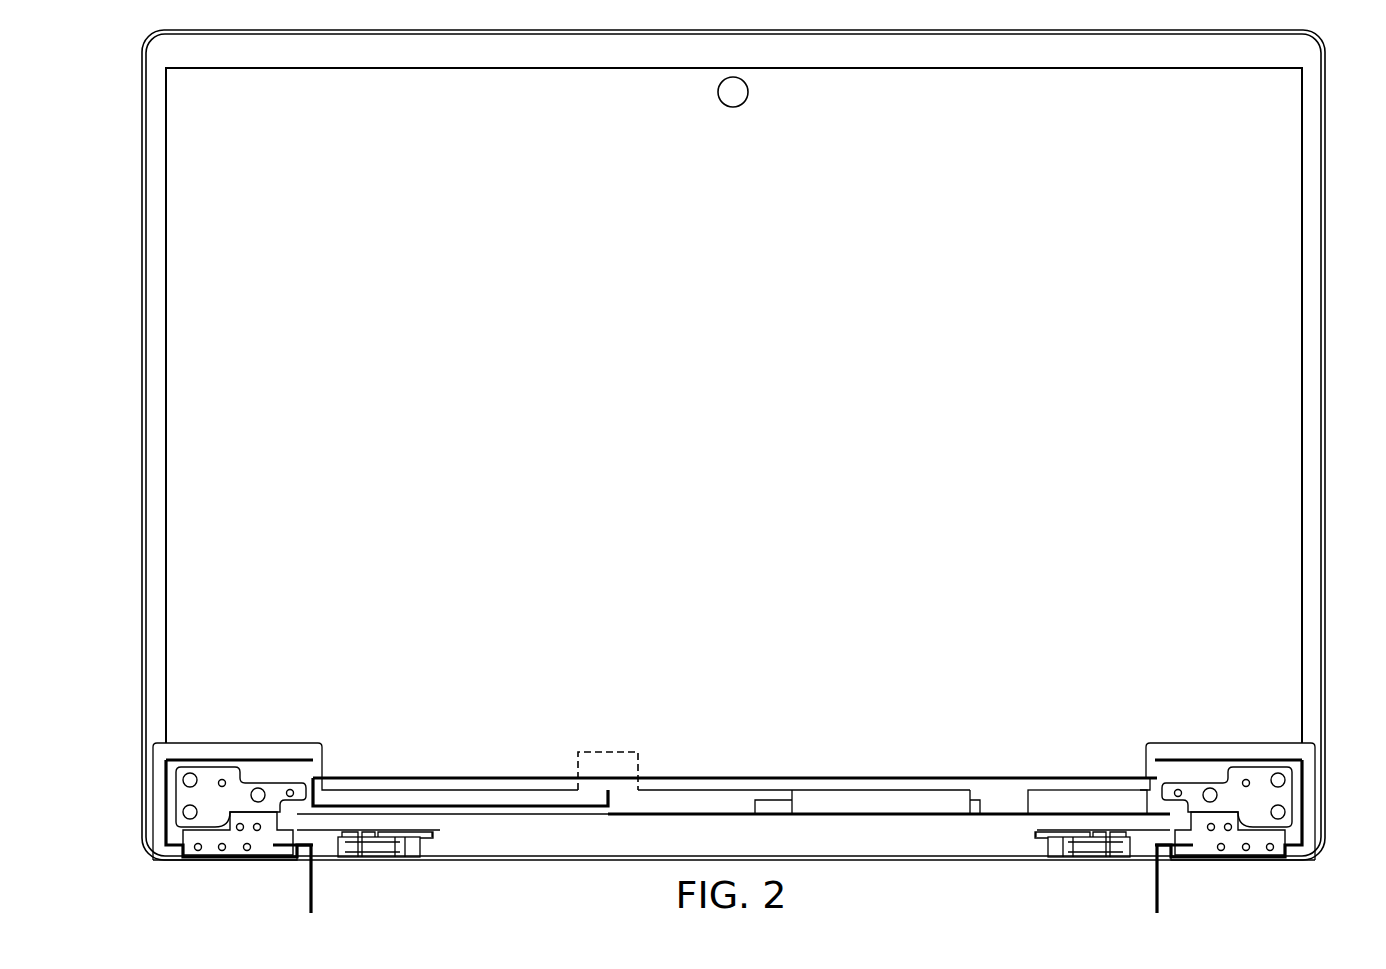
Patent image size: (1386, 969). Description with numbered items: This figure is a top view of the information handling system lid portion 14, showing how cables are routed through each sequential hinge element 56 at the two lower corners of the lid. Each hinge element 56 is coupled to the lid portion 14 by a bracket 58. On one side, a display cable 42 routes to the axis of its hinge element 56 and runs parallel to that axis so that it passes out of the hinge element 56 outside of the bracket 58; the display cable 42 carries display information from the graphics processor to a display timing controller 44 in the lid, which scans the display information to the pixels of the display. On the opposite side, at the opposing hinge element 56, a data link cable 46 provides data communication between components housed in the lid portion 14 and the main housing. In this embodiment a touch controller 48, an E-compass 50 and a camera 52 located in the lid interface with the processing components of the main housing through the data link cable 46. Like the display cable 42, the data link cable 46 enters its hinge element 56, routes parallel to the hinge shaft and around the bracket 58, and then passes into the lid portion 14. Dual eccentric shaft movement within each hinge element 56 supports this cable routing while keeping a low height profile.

The lid portion 14 is at (1312, 197).
The display cable 42 is at (310, 878).
The display timing controller 44 is at (608, 752).
The data link cable 46 is at (1160, 878).
The touch controller 48 is at (880, 790).
The E-compass 50 is at (1087, 789).
The camera 52 is at (733, 107).
The hinge element 56 is at (378, 860).
The bracket 58 is at (190, 798).